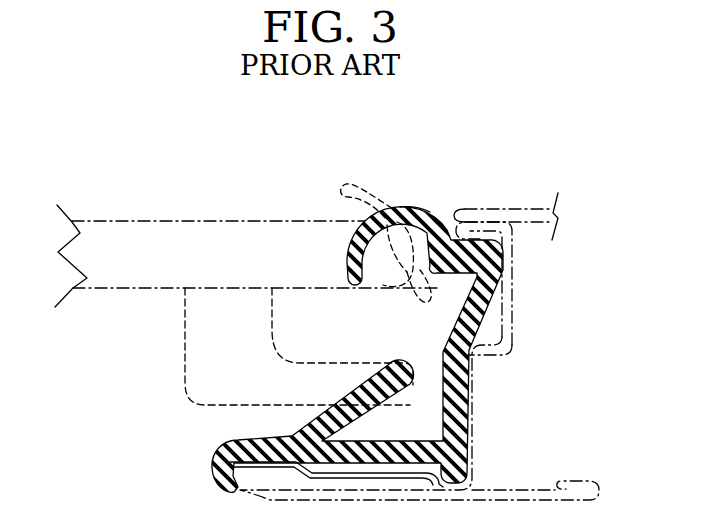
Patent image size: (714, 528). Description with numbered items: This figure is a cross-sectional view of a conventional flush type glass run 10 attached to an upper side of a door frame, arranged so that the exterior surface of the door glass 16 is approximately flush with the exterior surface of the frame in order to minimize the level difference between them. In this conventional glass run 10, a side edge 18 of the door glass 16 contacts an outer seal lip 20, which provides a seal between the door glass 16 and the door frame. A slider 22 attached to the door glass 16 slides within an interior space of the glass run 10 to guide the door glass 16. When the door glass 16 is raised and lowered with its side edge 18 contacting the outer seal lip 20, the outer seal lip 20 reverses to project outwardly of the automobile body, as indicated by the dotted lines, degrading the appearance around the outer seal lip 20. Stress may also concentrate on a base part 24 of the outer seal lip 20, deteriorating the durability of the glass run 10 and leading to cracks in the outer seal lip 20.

The glass run 10 is at (438, 198).
The door glass 16 is at (207, 221).
The side edge 18 is at (505, 277).
The outer seal lip 20 is at (353, 254).
The slider 22 is at (185, 337).
The base part 24 is at (421, 207).